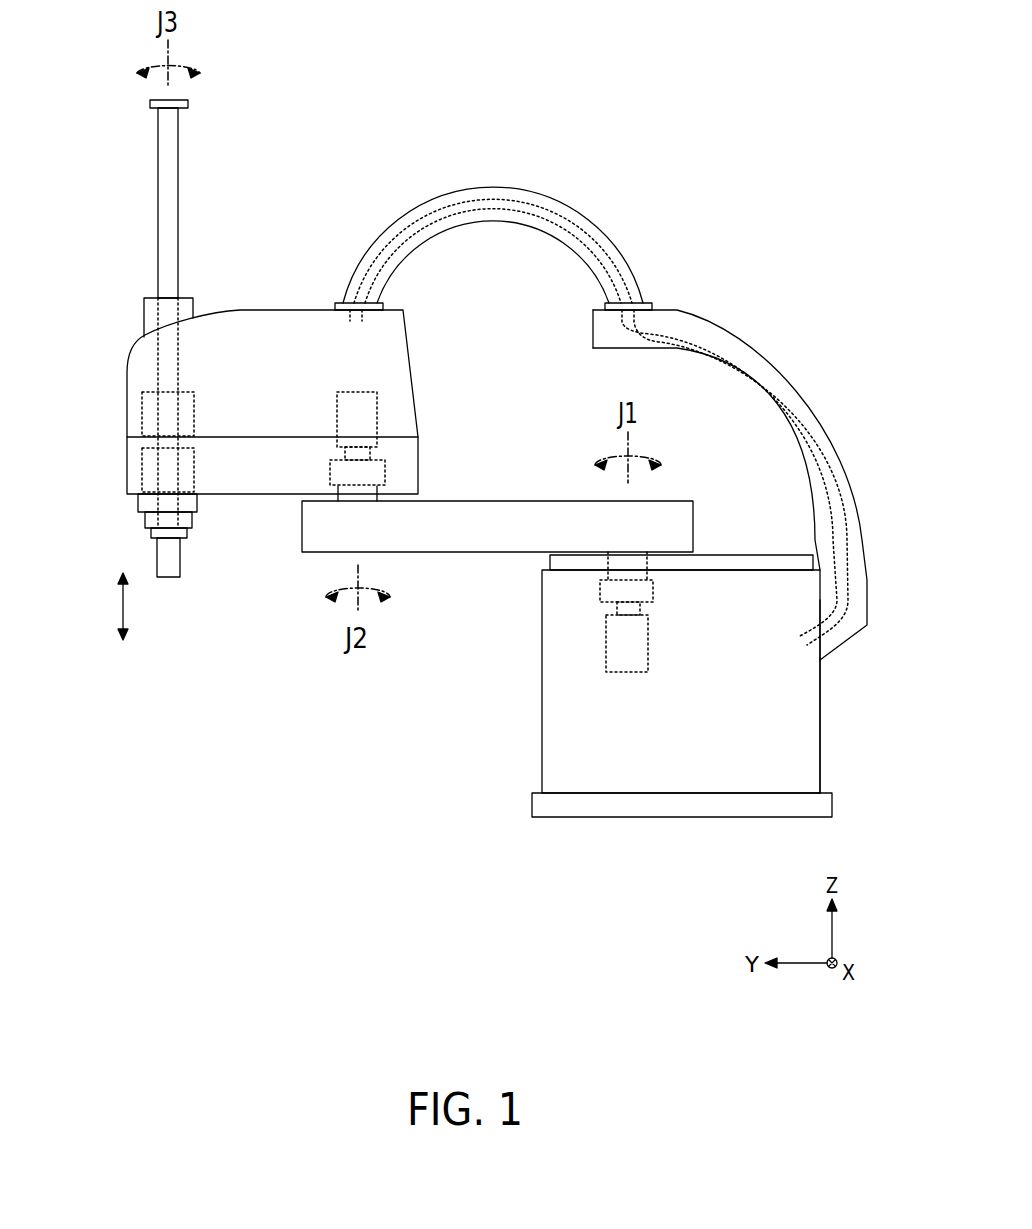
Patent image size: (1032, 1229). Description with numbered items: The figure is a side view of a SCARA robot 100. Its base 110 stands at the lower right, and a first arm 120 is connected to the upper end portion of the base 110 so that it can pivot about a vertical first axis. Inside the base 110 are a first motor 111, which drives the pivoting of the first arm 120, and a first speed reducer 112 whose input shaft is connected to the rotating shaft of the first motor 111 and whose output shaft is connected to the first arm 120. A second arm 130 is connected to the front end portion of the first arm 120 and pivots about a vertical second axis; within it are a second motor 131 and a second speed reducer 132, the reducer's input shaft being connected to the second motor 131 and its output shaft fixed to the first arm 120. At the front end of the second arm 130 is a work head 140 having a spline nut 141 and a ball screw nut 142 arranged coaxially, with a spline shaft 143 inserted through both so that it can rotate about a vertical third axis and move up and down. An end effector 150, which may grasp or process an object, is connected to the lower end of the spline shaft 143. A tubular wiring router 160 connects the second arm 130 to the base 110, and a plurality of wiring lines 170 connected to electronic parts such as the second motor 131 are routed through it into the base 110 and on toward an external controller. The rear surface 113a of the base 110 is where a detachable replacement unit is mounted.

The SCARA robot 100 is at (780, 184).
The base 110 is at (555, 727).
The first motor 111 is at (648, 640).
The first speed reducer 112 is at (653, 591).
The rear surface 113a is at (822, 707).
The first arm 120 is at (667, 508).
The second arm 130 is at (410, 341).
The second motor 131 is at (378, 407).
The second speed reducer 132 is at (385, 472).
The work head 140 is at (158, 154).
The spline nut 141 is at (142, 417).
The ball screw nut 142 is at (142, 472).
The spline shaft 143 is at (158, 228).
The end effector 150 is at (180, 553).
The wiring router 160 is at (712, 302).
The wiring lines 170 is at (447, 208).